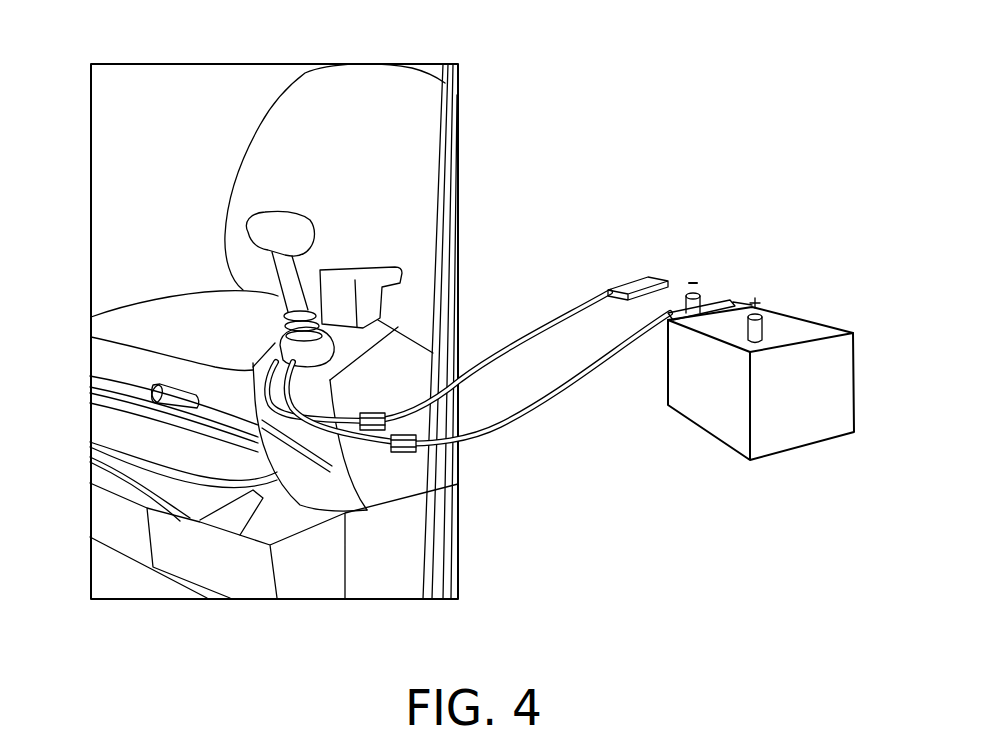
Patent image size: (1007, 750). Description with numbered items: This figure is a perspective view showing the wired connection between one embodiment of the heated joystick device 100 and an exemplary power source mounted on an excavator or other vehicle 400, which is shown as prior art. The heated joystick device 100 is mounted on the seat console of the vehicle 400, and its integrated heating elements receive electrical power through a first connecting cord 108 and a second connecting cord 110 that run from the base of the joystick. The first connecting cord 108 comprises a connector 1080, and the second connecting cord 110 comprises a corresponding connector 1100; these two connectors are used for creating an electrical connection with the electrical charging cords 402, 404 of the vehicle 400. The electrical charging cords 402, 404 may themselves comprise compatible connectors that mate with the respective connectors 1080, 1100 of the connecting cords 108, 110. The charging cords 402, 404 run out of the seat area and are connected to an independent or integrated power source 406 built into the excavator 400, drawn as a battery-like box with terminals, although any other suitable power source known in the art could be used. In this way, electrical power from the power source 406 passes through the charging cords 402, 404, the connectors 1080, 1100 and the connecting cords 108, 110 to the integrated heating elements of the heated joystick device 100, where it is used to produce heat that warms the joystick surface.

The excavator or other vehicle 400 is at (185, 105).
The heated joystick device 100 is at (285, 232).
The second connecting cord 110 is at (268, 416).
The first connecting cord 108 is at (292, 414).
The electrical charging cord 402 is at (578, 297).
The electrical charging cord 404 is at (566, 382).
The connector 1080 is at (375, 413).
The corresponding connector 1100 is at (403, 448).
The power source 406 is at (773, 428).